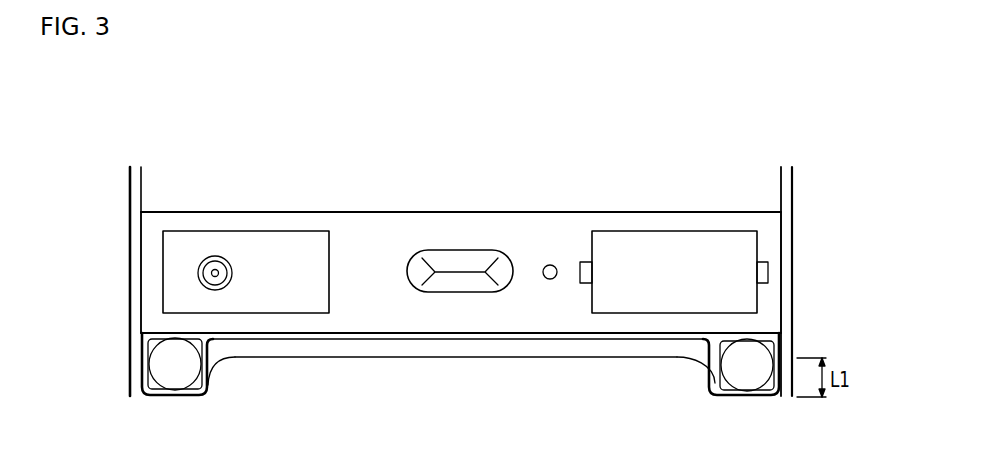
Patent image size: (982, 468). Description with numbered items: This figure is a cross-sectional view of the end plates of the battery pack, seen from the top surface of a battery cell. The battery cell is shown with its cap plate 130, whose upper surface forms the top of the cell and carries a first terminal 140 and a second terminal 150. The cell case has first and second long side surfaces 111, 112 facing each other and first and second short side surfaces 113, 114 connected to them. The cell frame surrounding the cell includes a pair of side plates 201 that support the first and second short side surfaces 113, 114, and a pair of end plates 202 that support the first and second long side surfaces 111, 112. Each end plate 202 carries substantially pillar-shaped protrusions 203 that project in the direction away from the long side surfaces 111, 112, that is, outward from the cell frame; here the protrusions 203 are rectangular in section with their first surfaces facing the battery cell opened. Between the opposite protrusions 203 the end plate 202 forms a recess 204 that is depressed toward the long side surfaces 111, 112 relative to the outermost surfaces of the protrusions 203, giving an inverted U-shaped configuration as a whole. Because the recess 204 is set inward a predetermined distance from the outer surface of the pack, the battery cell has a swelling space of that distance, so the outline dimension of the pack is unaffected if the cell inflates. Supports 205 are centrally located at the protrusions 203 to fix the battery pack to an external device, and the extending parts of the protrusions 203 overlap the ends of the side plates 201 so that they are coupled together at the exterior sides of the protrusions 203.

The first long side surface 111 is at (348, 334).
The second long side surface 112 is at (496, 211).
The first short side surface 113 is at (140, 272).
The second short side surface 114 is at (781, 297).
The cap plate 130 is at (395, 223).
The first terminal 140 is at (670, 240).
The second terminal 150 is at (277, 240).
The side plate 201 is at (787, 246).
The end plate 202 is at (766, 403).
The protrusion 203 is at (707, 378).
The recess 204 is at (487, 353).
The support 205 is at (735, 383).